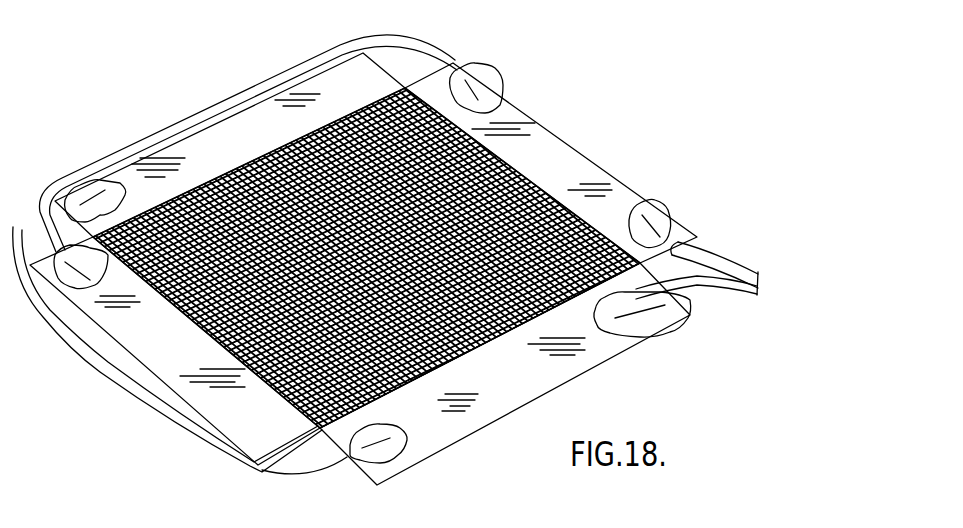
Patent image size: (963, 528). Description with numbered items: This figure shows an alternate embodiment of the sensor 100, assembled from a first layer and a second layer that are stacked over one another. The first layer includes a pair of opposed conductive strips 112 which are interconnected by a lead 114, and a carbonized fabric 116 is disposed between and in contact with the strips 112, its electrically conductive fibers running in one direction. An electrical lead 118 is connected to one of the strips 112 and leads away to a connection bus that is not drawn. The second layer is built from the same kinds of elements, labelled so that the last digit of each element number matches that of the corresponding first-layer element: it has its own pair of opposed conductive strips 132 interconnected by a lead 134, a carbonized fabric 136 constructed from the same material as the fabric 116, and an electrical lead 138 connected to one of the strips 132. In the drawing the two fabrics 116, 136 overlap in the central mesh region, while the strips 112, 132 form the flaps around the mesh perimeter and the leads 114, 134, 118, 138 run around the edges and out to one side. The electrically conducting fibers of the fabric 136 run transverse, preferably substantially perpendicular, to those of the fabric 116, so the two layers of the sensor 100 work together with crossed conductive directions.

The sensor 100 is at (618, 118).
The conductive strips 112 is at (568, 179).
The lead 114 is at (150, 124).
The carbonized fabric 116 is at (417, 389).
The electrical lead 118 is at (712, 254).
The conductive strips 132 is at (239, 152).
The lead 134 is at (102, 373).
The carbonized fabric 136 is at (417, 389).
The electrical lead 138 is at (699, 293).